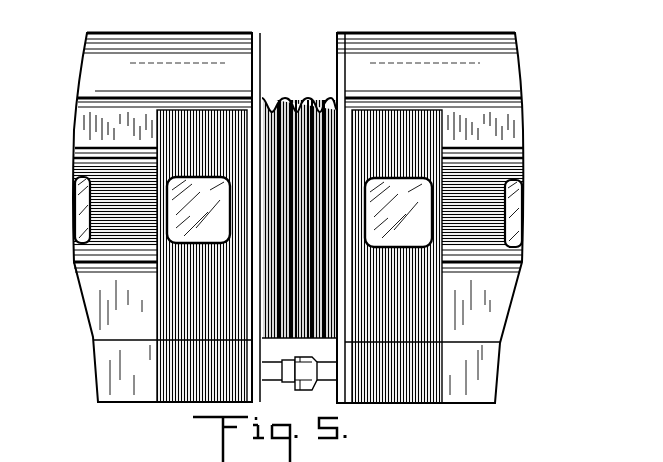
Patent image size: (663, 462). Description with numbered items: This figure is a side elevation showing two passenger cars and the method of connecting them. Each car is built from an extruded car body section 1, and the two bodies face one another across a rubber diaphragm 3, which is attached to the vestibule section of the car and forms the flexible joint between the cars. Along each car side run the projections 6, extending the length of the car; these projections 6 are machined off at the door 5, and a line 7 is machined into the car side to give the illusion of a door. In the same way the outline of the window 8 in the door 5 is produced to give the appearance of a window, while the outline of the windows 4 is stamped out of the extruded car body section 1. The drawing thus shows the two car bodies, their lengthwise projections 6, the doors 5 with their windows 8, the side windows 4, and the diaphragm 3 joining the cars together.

The extruded car body section 1 is at (138, 33).
The rubber diaphragm 3 is at (321, 96).
The windows 4 is at (80, 203).
The door 5 is at (193, 124).
The projections 6 is at (93, 157).
The line 7 is at (156, 136).
The window 8 is at (191, 226).